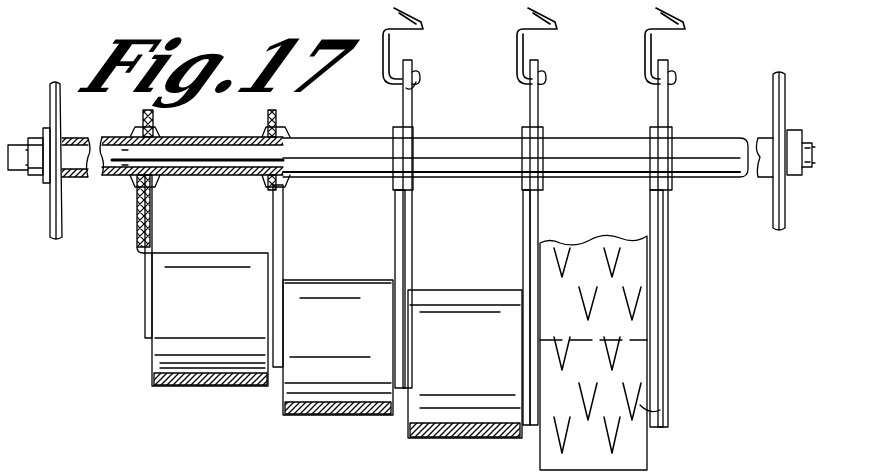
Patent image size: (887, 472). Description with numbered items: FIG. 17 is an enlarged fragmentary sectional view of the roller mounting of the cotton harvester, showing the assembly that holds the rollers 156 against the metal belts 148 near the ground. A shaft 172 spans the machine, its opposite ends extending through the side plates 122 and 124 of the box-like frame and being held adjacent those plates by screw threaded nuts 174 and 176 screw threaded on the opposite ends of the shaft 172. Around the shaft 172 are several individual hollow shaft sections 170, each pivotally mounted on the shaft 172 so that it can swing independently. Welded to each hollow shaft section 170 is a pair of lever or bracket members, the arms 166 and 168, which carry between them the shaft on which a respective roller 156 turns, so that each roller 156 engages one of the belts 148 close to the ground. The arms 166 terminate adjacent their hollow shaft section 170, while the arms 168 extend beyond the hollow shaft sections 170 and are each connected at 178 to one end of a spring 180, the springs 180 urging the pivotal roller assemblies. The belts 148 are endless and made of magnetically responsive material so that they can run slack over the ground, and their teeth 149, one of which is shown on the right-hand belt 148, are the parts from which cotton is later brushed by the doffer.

The side plate 122 is at (776, 190).
The side plate 124 is at (57, 228).
The metal belt 148 is at (630, 372).
The tooth 149 is at (617, 438).
The roller 156 is at (183, 352).
The arm 166 is at (268, 212).
The arm 168 is at (150, 233).
The hollow shaft section 170 is at (180, 148).
The shaft 172 is at (808, 168).
The screw threaded nut 174 is at (796, 136).
The screw threaded nut 176 is at (25, 145).
The connection 178 is at (418, 88).
The spring 180 is at (422, 24).